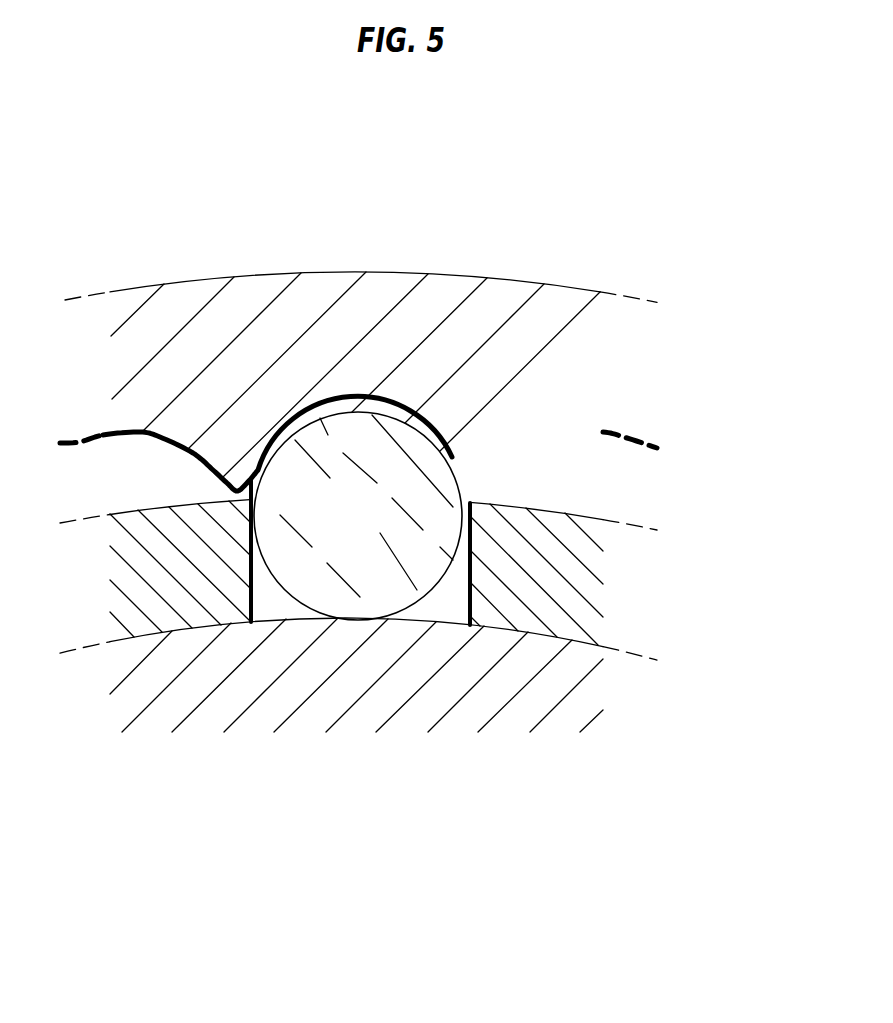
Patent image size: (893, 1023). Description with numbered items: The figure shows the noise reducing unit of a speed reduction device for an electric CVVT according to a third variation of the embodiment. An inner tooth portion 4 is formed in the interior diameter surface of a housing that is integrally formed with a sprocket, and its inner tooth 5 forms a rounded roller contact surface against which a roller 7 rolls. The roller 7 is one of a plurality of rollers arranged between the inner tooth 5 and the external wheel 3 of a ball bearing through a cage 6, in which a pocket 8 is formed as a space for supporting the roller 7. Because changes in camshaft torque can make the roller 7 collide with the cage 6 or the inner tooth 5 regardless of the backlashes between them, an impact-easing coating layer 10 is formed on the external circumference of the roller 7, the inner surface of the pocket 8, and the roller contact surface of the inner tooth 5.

The external wheel 3 is at (160, 673).
The inner tooth portion 4 is at (489, 248).
The inner tooth 5 is at (178, 443).
The cage 6 is at (573, 590).
The roller 7 is at (358, 436).
The pocket 8 is at (423, 613).
The coating layer 10 is at (482, 470).